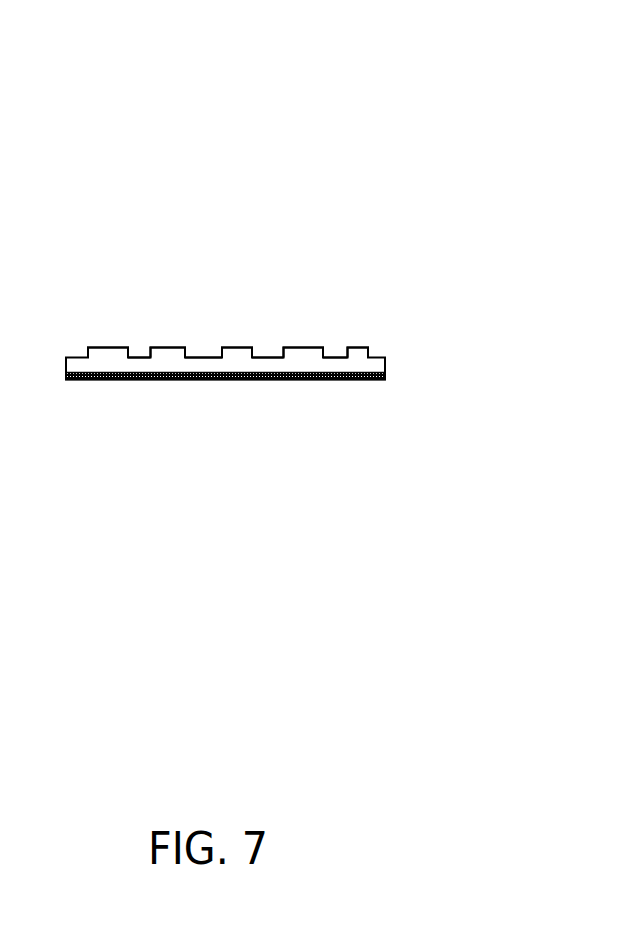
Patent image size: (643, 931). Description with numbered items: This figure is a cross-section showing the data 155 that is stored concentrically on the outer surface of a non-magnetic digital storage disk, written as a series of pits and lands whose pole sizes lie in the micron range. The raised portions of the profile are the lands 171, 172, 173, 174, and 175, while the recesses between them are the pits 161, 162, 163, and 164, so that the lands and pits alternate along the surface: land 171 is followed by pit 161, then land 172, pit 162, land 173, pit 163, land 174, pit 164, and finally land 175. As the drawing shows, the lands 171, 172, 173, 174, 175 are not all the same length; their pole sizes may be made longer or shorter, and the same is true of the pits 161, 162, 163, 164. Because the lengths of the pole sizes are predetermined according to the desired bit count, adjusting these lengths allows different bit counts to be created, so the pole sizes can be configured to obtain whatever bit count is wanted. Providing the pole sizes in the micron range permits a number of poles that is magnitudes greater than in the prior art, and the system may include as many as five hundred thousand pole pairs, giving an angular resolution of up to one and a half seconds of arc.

The data 155 is at (452, 228).
The pit 161 is at (138, 357).
The pit 162 is at (203, 357).
The pit 163 is at (268, 357).
The pit 164 is at (335, 357).
The land 171 is at (107, 347).
The land 172 is at (166, 347).
The land 173 is at (238, 347).
The land 174 is at (305, 347).
The land 175 is at (358, 347).